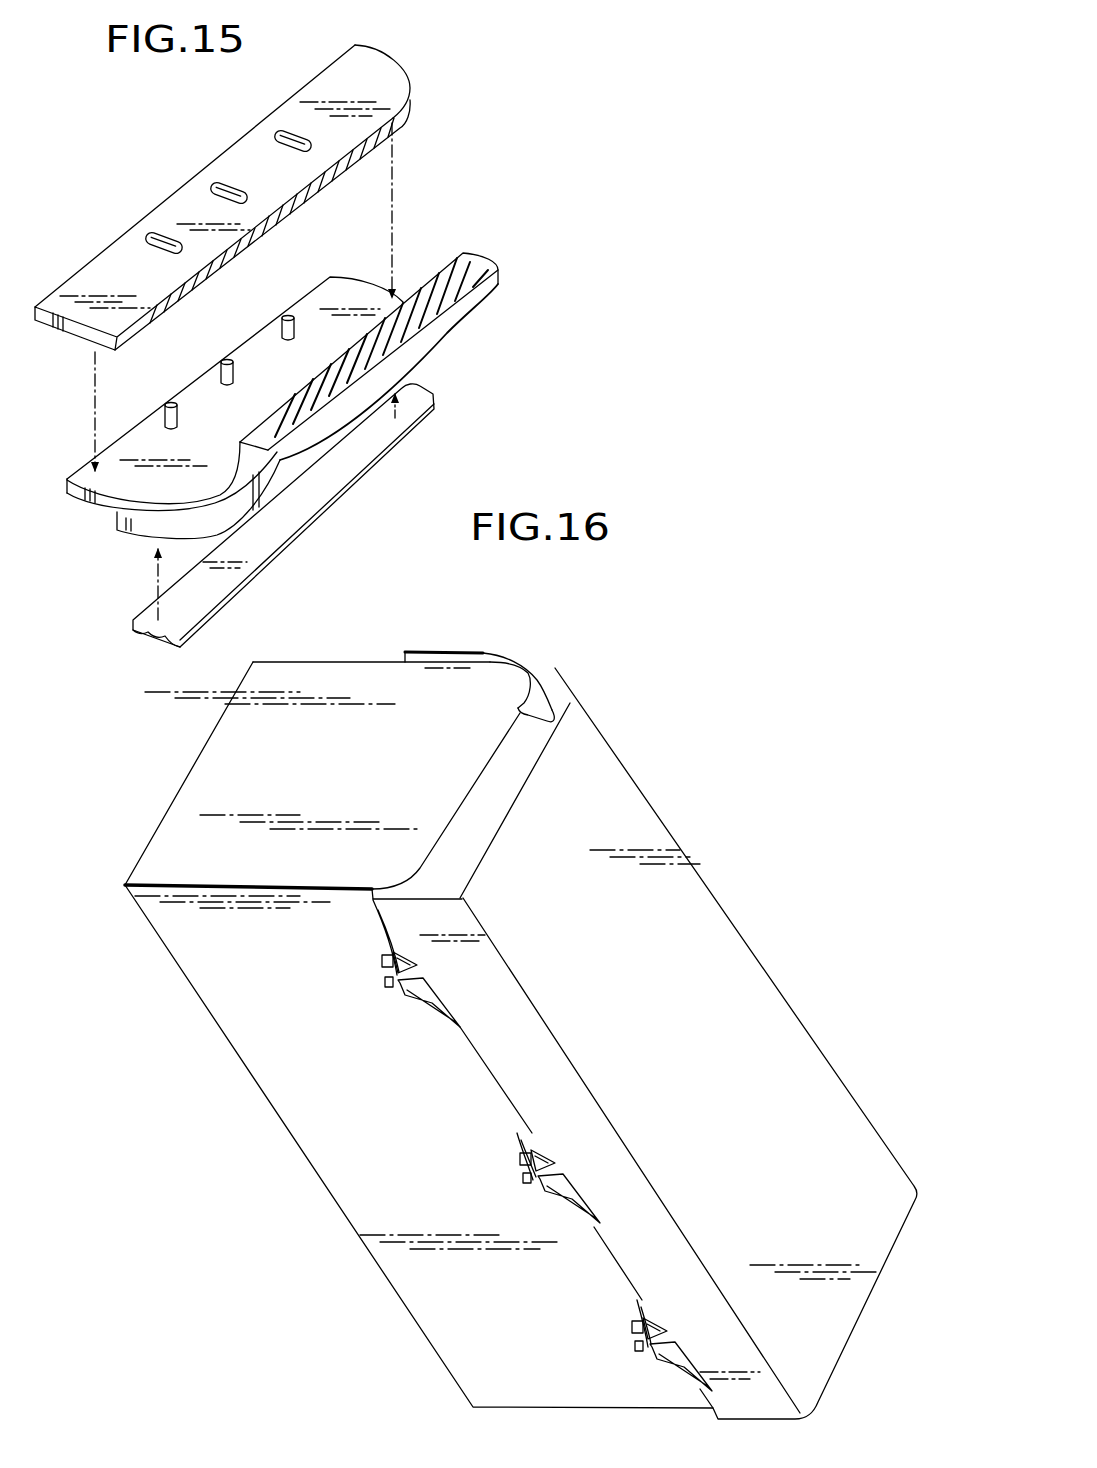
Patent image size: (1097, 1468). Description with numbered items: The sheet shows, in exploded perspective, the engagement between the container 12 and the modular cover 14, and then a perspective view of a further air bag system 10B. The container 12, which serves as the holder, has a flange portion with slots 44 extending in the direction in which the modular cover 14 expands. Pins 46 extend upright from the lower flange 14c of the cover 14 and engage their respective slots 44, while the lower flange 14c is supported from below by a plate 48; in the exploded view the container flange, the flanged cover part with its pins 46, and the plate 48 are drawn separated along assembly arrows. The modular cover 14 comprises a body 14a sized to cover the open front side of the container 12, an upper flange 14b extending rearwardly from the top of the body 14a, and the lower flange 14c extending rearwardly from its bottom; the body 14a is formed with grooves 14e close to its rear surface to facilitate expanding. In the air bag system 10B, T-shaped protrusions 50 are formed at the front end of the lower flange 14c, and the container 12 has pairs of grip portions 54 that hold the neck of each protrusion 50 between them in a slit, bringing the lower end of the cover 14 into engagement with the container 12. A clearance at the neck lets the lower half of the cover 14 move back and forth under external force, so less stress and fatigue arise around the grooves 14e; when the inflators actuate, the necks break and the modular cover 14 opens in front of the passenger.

In FIG. 15, the container 12 is at (387, 83).
In FIG. 16, the container 12 is at (363, 680).
In FIG. 15, the slots 44 is at (227, 190).
In FIG. 15, the pins 46 is at (293, 323).
In FIG. 15, the modular cover 14 is at (447, 333).
In FIG. 16, the modular cover 14 is at (521, 1003).
In FIG. 15, the plate 48 is at (250, 540).
In FIG. 16, the air bag system 10B is at (648, 685).
In FIG. 16, the body 14a is at (700, 907).
In FIG. 16, the upper flange 14b is at (467, 653).
In FIG. 16, the lower flange 14c is at (510, 1077).
In FIG. 16, the grooves 14e is at (553, 677).
In FIG. 16, the T-shaped protrusions 50 is at (382, 973).
In FIG. 16, the grip portions 54 is at (386, 938).